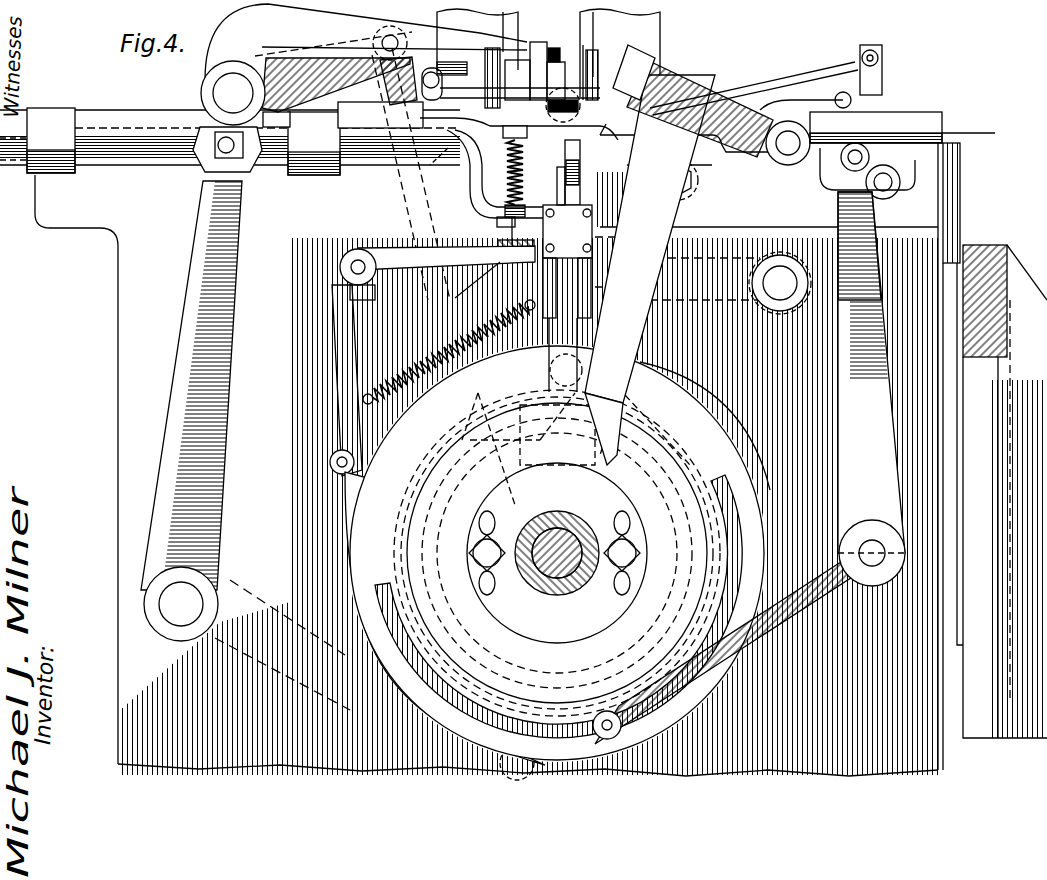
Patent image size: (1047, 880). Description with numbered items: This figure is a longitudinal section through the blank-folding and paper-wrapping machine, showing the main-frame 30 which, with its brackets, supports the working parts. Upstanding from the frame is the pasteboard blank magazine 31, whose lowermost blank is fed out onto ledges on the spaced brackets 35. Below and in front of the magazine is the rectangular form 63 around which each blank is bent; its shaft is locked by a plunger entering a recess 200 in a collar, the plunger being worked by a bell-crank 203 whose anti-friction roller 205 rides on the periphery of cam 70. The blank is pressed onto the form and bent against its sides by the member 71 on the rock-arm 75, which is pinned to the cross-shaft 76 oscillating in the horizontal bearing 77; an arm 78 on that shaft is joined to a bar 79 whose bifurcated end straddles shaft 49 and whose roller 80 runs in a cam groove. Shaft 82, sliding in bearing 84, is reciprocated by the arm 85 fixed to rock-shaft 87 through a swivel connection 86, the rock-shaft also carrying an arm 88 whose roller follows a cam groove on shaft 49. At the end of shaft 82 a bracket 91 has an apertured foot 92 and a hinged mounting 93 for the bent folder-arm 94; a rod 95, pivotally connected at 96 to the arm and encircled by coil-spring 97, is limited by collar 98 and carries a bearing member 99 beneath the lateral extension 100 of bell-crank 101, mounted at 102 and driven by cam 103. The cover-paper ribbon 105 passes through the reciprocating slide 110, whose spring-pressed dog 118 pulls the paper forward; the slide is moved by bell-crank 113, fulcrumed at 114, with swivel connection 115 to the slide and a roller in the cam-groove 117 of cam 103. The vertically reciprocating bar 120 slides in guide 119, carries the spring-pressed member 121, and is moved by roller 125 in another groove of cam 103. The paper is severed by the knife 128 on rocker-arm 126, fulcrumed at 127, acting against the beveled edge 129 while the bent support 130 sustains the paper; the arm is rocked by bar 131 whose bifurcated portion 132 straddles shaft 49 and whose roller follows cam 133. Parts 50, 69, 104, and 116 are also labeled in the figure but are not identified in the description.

The main-frame 30 is at (489, 459).
The pasteboard blank magazine 31 is at (660, 30).
The brackets 35 is at (484, 76).
The shaft 49 is at (565, 580).
The clutch shoe 50 is at (528, 390).
The rectangular form 63 is at (568, 107).
The lever 69 is at (650, 270).
The cam 70 is at (552, 40).
The member 71 is at (572, 60).
The rock-arm 75 is at (366, 58).
The cross-shaft 76 is at (225, 93).
The horizontal bearing 77 is at (200, 127).
The arm 78 is at (336, 85).
The bar 79 is at (425, 215).
The anti-friction roller 80 is at (480, 418).
The shaft 82 is at (135, 150).
The bearing 84 is at (267, 138).
The arm 85 is at (228, 345).
The swivel connection 86 is at (228, 147).
The rock-shaft 87 is at (190, 600).
The arm 88 is at (270, 680).
The bracket 91 is at (470, 185).
The apertured foot 92 is at (525, 210).
The pivotal mounting 93 is at (385, 88).
The bent folder-arm 94 is at (495, 104).
The rod 95 is at (497, 232).
The pivotal connection 96 is at (505, 140).
The coil-spring 97 is at (520, 175).
The collar 98 is at (480, 216).
The bearing member 99 is at (460, 286).
The lateral extension 100 is at (420, 250).
The bell-crank 101 is at (406, 263).
The rocking mounting 102 is at (340, 267).
The cam 103 is at (352, 500).
The spring 104 is at (449, 352).
The cover-paper strip 105 is at (985, 152).
The reciprocating slide 110 is at (875, 100).
The bell-crank 113 is at (855, 372).
The fulcrum 114 is at (750, 639).
The swivel-connection 115 is at (880, 157).
The pivot 116 is at (622, 740).
The cam-groove 117 is at (575, 740).
The spring-pressed dog 118 is at (885, 112).
The guide 119 is at (592, 235).
The vertically-reciprocating bar 120 is at (567, 325).
The spring-pressed member 121 is at (565, 148).
The roller 125 is at (645, 420).
The rocker-arm 126 is at (690, 90).
The fulcrum 127 is at (778, 160).
The blade or knife 128 is at (628, 70).
The beveled edge 129 is at (648, 128).
The bent support 130 is at (608, 122).
The bar 131 is at (705, 228).
The bifurcated portion 132 is at (735, 478).
The cam 133 is at (640, 585).
The recess 200 is at (838, 230).
The bell-crank 203 is at (780, 283).
The anti-friction roller 205 is at (845, 548).